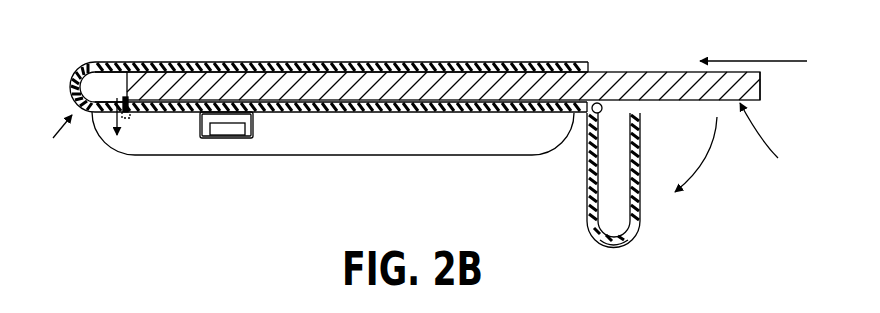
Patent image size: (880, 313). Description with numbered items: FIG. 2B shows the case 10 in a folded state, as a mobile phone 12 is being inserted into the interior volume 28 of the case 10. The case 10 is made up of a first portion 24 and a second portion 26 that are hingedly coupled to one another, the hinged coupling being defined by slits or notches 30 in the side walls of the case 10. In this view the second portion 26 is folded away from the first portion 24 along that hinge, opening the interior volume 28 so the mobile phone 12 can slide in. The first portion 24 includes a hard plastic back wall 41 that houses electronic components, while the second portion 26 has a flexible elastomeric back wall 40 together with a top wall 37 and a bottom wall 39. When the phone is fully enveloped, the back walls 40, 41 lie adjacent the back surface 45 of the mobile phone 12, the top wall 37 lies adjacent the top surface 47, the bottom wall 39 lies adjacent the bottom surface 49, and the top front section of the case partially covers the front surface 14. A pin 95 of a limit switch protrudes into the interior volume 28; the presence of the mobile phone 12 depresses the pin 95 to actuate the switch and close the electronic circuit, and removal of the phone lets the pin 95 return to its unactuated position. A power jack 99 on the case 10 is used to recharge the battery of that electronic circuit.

The case 10 is at (47, 138).
The mobile phone 12 is at (775, 140).
The front surface 14 is at (658, 72).
The first portion 24 is at (358, 62).
The second portion 26 is at (640, 212).
The interior volume 28 is at (93, 90).
The slits or notches 30 is at (598, 118).
The top wall 37 is at (82, 67).
The bottom wall 39 is at (610, 247).
The back wall 40 is at (588, 205).
The back wall 41 is at (180, 157).
The back surface 45 is at (655, 100).
The top surface 47 is at (127, 92).
The bottom surface 49 is at (760, 88).
The pin 95 is at (137, 113).
The power jack 99 is at (230, 138).